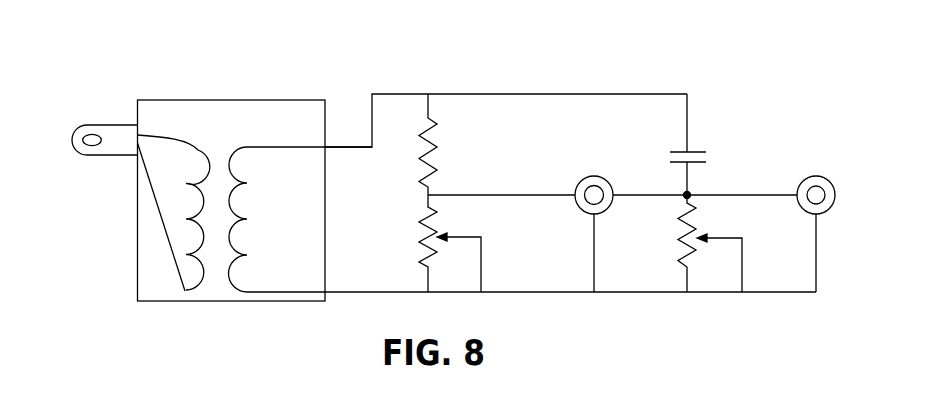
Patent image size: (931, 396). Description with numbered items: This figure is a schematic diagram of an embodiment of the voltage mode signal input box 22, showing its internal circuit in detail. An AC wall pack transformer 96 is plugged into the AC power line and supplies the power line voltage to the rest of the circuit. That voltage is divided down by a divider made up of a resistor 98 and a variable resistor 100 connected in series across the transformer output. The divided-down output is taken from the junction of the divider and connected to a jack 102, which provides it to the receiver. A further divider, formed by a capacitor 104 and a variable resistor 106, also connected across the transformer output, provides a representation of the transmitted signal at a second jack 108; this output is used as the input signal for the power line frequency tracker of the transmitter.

The voltage mode signal input box 22 is at (625, 61).
The AC wall pack transformer 96 is at (232, 100).
The resistor 98 is at (426, 163).
The variable resistor 100 is at (427, 254).
The jack 102 is at (582, 209).
The capacitor 104 is at (678, 147).
The variable resistor 106 is at (688, 257).
The jack 108 is at (804, 211).